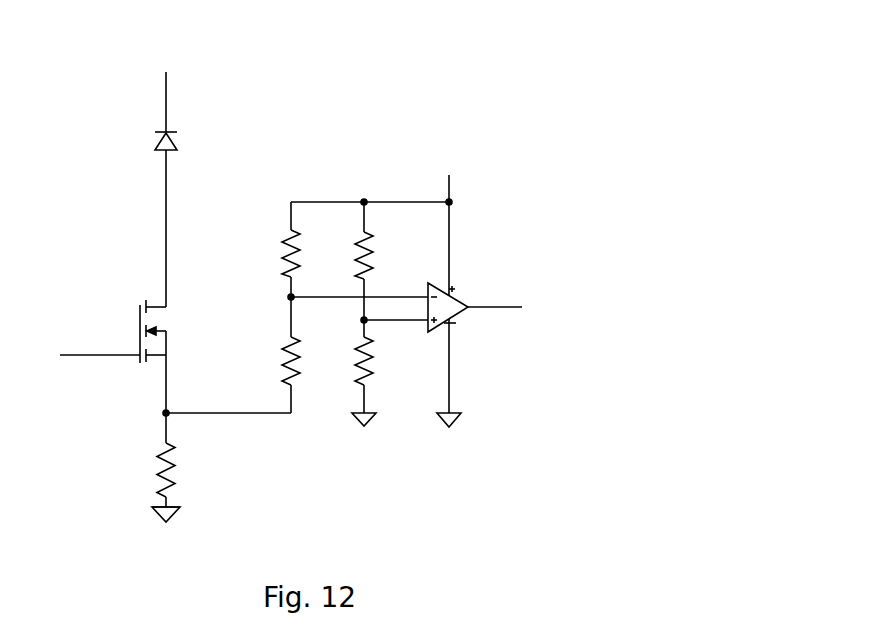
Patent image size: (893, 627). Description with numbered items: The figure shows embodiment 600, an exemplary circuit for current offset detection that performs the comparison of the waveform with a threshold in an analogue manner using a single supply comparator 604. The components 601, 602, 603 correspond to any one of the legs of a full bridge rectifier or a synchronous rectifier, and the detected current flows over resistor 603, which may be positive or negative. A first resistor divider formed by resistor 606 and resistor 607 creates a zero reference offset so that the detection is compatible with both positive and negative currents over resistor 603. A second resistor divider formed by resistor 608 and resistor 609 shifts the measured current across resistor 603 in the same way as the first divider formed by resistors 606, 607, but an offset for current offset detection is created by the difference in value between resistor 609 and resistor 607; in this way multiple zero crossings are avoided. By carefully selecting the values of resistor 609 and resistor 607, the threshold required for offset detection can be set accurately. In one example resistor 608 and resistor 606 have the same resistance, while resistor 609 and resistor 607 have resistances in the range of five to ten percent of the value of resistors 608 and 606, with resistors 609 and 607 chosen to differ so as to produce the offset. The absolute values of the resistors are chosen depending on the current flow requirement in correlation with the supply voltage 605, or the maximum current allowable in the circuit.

The embodiment 600 is at (433, 52).
The rectifier leg component 601 is at (147, 140).
The rectifier leg component 602 is at (137, 298).
The resistor 603 is at (150, 458).
The single supply comparator 604 is at (475, 293).
The supply voltage 605 is at (455, 173).
The resistor R3 606 is at (352, 228).
The resistor R4 607 is at (354, 378).
The resistor R1 608 is at (275, 250).
The resistor R2 609 is at (274, 353).